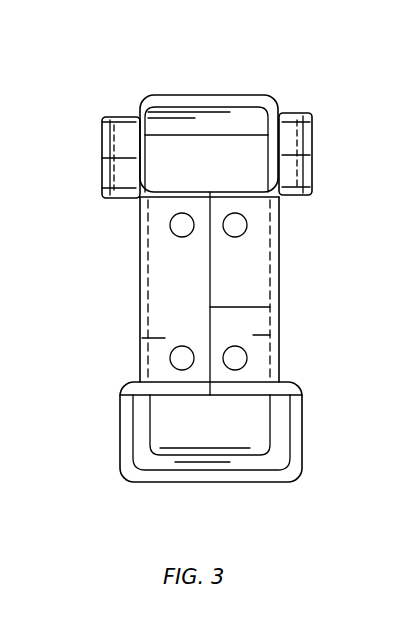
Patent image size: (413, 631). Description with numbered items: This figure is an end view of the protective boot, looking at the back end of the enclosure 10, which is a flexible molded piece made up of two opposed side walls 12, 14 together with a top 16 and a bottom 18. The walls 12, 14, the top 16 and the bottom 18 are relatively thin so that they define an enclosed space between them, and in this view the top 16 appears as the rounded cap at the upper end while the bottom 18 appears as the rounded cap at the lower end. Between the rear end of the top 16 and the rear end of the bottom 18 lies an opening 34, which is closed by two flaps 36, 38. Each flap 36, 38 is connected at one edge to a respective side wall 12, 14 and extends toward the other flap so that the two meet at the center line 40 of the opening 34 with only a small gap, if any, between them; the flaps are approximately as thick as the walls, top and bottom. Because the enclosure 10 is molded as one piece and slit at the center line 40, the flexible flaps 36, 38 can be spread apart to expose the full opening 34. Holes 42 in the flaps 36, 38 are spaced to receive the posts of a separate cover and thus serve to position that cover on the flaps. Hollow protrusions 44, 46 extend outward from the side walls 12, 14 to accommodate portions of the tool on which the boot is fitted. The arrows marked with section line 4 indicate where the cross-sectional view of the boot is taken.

The section line 4 is at (233, 50).
The enclosure 10 is at (313, 96).
The side wall 12 is at (282, 270).
The side wall 14 is at (140, 318).
The top 16 is at (165, 95).
The bottom 18 is at (168, 484).
The opening 34 is at (165, 147).
The flap 36 is at (270, 335).
The flap 38 is at (160, 338).
The center line 40 is at (270, 307).
The holes 42 is at (172, 230).
The hollow protrusion 44 is at (107, 185).
The hollow protrusion 46 is at (122, 442).